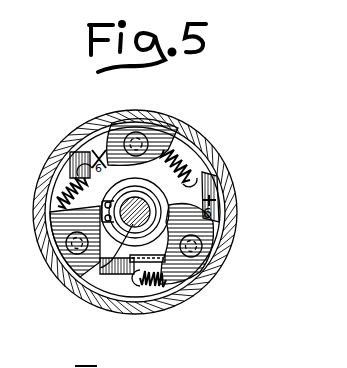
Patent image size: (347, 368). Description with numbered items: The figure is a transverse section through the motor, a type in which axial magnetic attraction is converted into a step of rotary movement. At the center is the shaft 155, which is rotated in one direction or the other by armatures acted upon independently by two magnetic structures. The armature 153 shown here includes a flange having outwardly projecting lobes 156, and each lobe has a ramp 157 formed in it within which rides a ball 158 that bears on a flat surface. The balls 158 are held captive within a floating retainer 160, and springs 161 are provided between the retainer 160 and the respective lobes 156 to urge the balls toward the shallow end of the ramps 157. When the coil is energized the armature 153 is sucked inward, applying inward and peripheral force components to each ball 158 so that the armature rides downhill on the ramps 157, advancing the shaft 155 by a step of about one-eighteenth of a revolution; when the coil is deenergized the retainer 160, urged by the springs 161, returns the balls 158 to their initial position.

The armature 153 is at (102, 222).
The shaft 155 is at (131, 270).
The lobes 156 is at (143, 128).
The ramp 157 is at (113, 121).
The ball 158 is at (172, 114).
The floating retainer 160 is at (210, 183).
The springs 161 is at (195, 158).